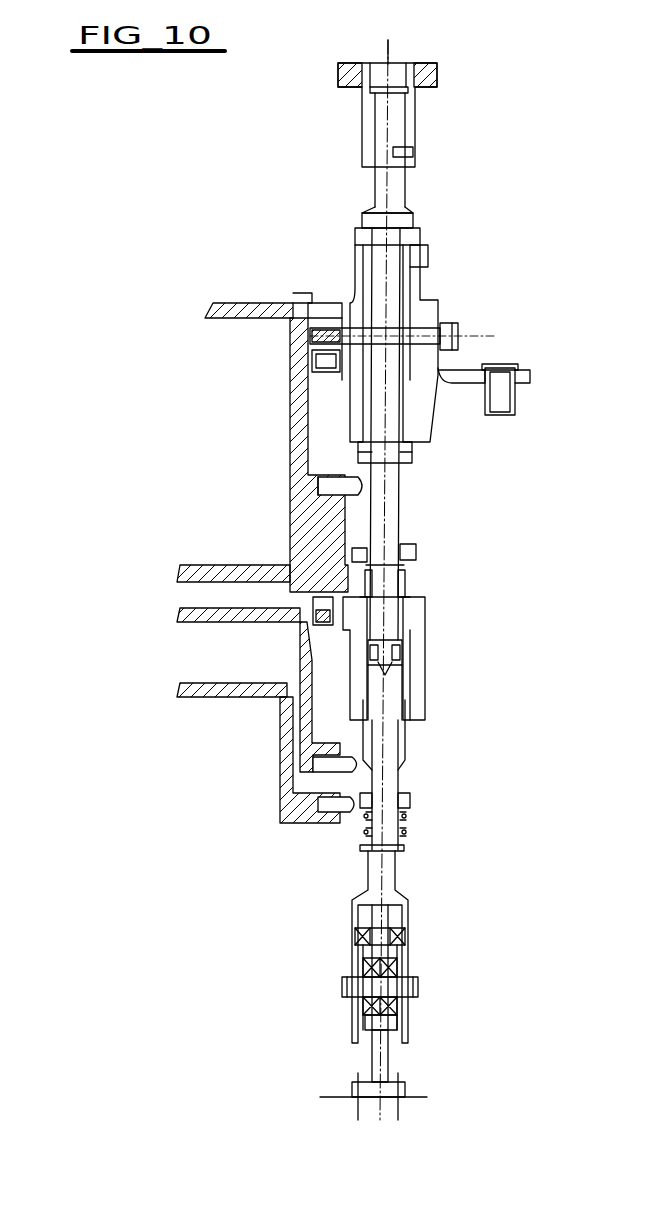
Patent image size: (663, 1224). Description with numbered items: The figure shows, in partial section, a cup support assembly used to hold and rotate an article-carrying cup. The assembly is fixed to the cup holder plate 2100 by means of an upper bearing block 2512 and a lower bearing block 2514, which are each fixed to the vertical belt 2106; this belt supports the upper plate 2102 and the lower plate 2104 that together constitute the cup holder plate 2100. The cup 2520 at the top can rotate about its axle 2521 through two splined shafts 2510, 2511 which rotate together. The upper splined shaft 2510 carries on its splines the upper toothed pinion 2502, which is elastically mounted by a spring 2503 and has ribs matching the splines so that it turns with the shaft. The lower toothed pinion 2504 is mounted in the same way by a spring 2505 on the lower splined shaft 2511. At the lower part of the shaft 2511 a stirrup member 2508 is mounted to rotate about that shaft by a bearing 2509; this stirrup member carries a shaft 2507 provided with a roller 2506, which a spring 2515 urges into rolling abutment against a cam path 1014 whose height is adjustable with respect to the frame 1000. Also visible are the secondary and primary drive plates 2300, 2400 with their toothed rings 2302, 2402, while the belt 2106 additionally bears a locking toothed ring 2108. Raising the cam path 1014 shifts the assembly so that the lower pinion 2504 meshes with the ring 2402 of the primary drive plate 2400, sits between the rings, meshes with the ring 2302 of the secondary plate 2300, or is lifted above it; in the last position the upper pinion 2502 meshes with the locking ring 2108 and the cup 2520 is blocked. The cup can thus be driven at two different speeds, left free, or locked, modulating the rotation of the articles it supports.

The frame 1000 is at (383, 1112).
The cam path 1014 is at (392, 1060).
The cup holder plate 2100 is at (227, 404).
The upper plate 2102 is at (240, 310).
The lower plate 2104 is at (185, 570).
The vertical belt 2106 is at (292, 435).
The locking toothed ring 2108 is at (345, 487).
The secondary drive plate 2300 is at (196, 692).
The toothed ring of secondary drive plate 2302 is at (332, 765).
The primary drive plate 2400 is at (207, 770).
The toothed ring of primary drive plate 2402 is at (330, 803).
The upper toothed pinion 2502 is at (420, 553).
The spring 2503 is at (404, 585).
The lower toothed pinion 2504 is at (412, 800).
The spring 2505 is at (405, 828).
The roller 2506 is at (400, 1003).
The shaft 2507 is at (417, 985).
The stirrup member 2508 is at (400, 960).
The bearing 2509 is at (420, 935).
The splined shaft 2510 is at (400, 512).
The splined shaft 2511 is at (403, 782).
The upper bearing block 2512 is at (418, 290).
The lower bearing block 2514 is at (420, 612).
The spring 2515 is at (405, 655).
The cup 2520 is at (430, 73).
The axle 2521 is at (396, 50).